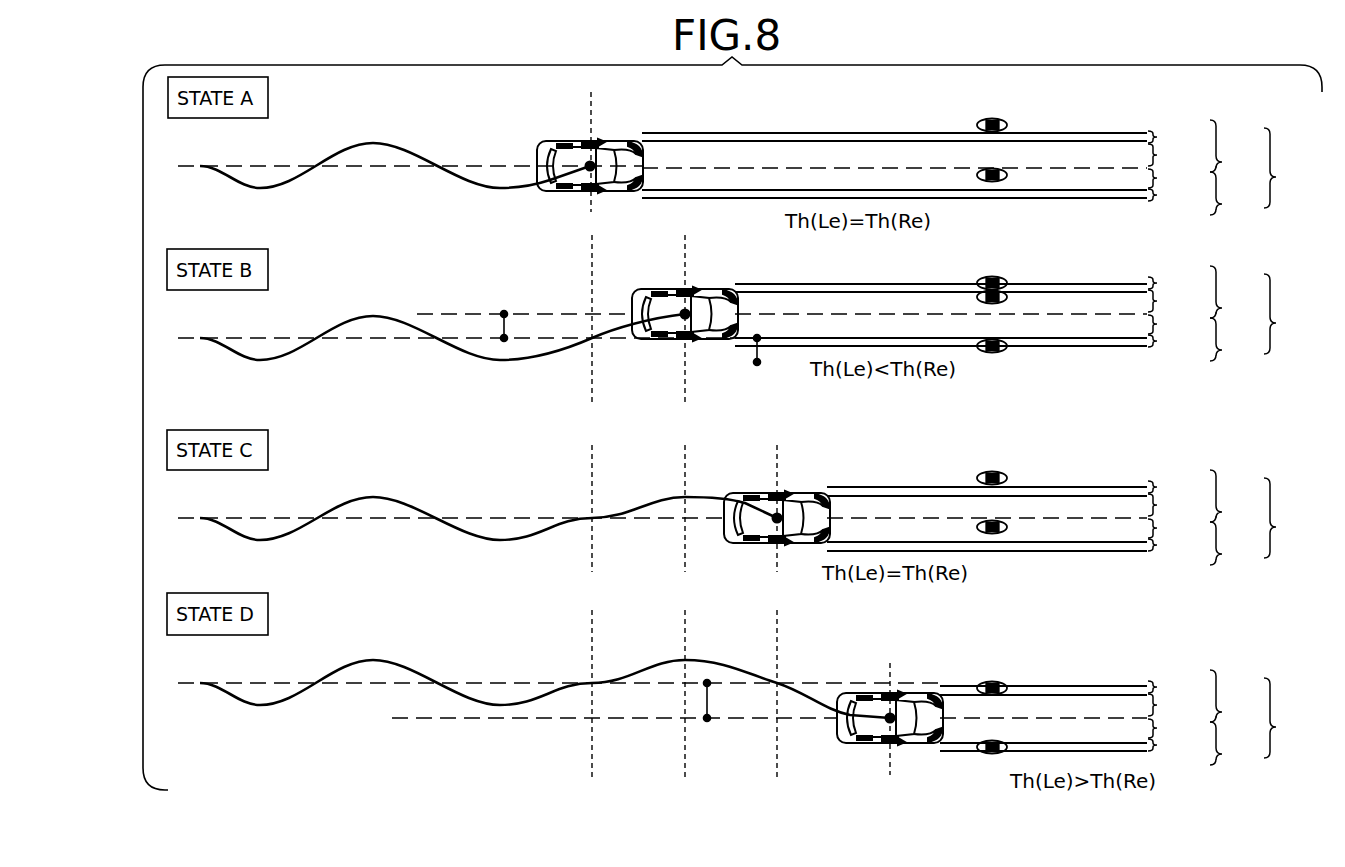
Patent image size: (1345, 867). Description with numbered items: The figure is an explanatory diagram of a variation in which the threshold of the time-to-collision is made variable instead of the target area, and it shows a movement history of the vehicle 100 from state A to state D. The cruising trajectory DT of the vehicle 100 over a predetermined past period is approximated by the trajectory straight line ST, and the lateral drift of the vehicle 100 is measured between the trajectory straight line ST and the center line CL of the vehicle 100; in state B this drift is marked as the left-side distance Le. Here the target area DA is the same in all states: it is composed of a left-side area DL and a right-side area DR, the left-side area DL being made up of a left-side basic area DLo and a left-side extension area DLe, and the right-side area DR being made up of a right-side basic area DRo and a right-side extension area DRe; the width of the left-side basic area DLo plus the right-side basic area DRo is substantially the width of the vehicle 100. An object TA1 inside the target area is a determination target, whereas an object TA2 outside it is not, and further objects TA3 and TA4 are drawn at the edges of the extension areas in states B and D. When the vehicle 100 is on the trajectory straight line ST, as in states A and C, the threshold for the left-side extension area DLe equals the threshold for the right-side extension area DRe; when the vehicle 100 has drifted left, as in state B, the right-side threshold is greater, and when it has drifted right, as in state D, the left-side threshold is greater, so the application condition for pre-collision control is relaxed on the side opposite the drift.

The vehicle 100 is at (560, 143).
The trajectory straight line ST is at (225, 166).
The cruising trajectory DT is at (258, 188).
The center line of the vehicle CL is at (452, 166).
The left-side threshold parameter Le is at (757, 362).
The object TA1 is at (992, 182).
The object TA2 is at (1008, 124).
The target area 3 TA3 is at (977, 279).
The target area 4 TA4 is at (988, 754).
The left-side extension area DLe is at (975, 404).
The left-side basic area DLo is at (975, 418).
The right-side basic area DRo is at (975, 466).
The right-side extension area DRe is at (975, 482).
The left-side area DL is at (1212, 167).
The right-side area DR is at (1212, 313).
The target area DA is at (1212, 617).